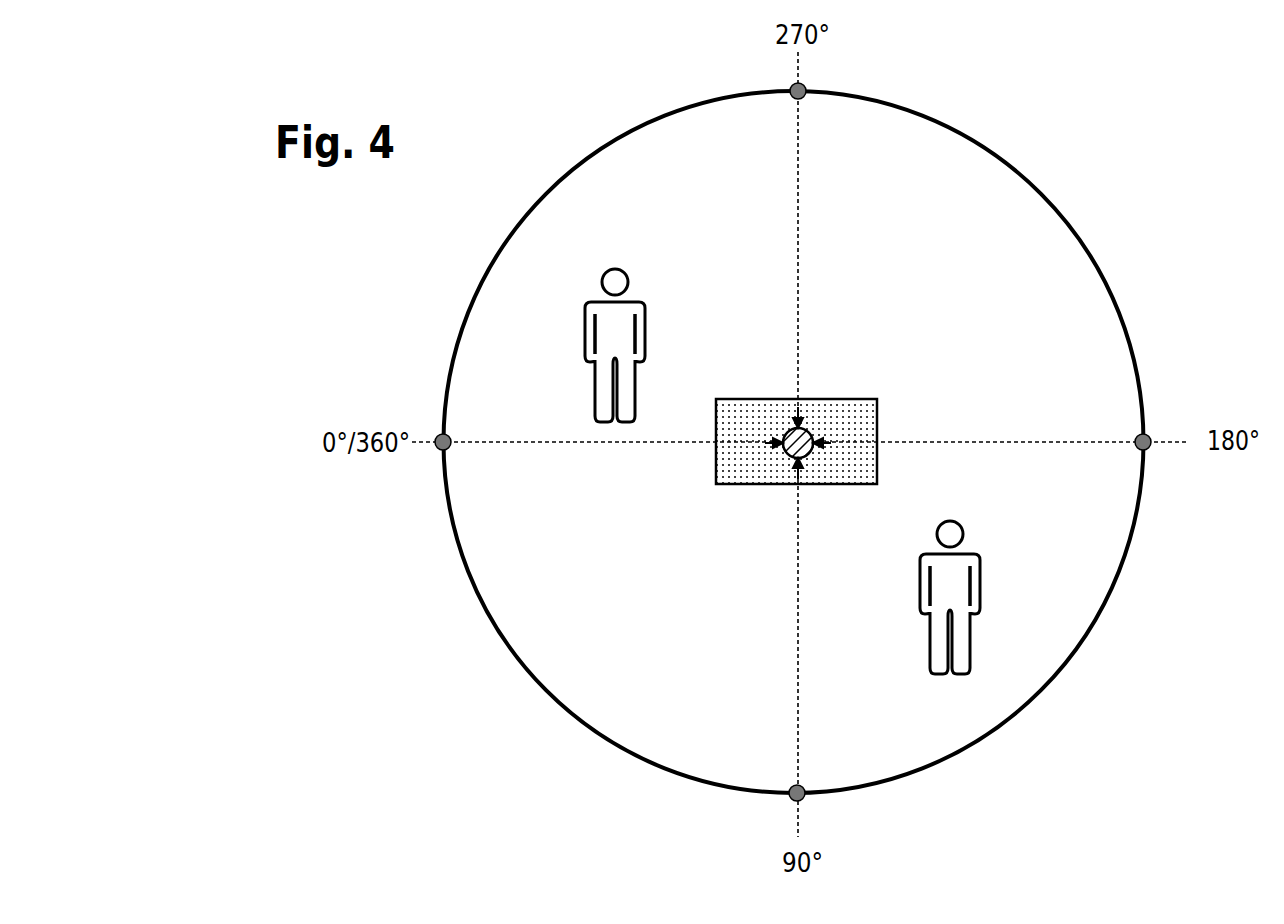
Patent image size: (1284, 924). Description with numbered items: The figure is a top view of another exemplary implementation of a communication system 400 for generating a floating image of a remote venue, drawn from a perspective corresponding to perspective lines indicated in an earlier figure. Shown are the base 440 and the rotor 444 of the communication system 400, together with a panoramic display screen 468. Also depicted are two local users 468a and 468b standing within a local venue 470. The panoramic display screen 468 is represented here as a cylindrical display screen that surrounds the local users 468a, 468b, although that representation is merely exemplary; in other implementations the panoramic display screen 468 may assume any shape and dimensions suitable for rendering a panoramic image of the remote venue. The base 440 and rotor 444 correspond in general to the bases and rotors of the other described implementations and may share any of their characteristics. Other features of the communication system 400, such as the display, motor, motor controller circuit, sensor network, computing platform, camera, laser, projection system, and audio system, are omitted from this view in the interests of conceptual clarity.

The communication system 400 is at (1103, 195).
The panoramic display screen 468 is at (673, 115).
The local user 468a is at (585, 338).
The local user 468b is at (982, 578).
The local venue 470 is at (932, 357).
The base 440 is at (878, 478).
The rotor 444 is at (810, 418).